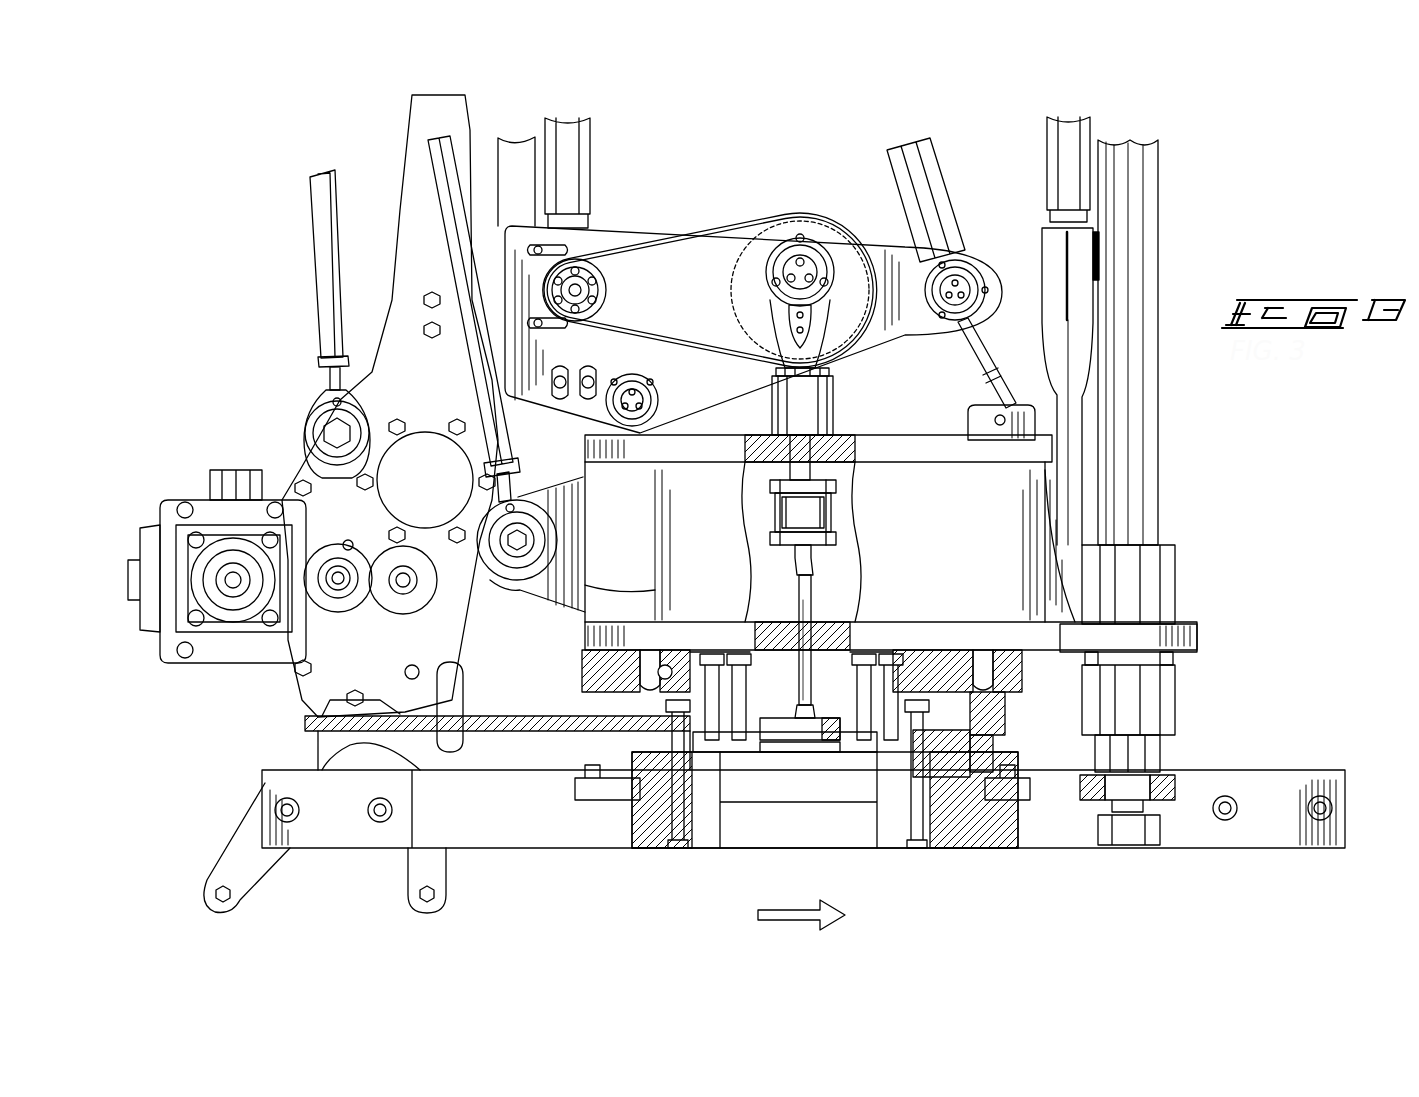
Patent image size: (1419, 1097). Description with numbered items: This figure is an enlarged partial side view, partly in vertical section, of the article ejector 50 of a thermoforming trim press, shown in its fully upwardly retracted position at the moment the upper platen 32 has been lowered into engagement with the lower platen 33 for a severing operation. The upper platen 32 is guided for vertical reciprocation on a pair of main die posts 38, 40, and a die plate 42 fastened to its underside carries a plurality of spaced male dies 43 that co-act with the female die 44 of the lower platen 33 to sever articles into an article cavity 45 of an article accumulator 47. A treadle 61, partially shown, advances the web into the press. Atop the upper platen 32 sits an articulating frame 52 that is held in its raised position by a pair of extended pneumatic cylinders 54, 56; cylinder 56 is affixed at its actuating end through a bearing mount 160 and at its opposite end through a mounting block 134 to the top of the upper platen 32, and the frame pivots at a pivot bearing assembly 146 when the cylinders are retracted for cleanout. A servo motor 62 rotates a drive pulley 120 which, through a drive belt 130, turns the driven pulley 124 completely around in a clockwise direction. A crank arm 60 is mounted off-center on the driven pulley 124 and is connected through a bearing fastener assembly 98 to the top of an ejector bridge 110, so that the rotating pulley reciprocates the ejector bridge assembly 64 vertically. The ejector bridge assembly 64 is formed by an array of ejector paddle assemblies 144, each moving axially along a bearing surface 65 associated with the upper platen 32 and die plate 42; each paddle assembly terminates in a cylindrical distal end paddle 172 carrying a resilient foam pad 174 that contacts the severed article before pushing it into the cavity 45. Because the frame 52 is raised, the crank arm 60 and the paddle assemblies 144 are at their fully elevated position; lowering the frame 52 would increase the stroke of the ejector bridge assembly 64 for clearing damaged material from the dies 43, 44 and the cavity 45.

The article ejector 50 is at (707, 128).
The treadle 61 is at (300, 346).
The servo motor 62 is at (600, 224).
The drive pulley 120 is at (605, 300).
The drive belt 130 is at (728, 232).
The crank arm 60 is at (762, 322).
The articulating frame 52 is at (893, 240).
The driven pulley 124 is at (835, 340).
The pivot bearing assembly 146 is at (632, 395).
The bearing fastener assembly 98 is at (850, 452).
The upper platen 32 is at (897, 444).
The ejector bridge 110 is at (838, 508).
The ejector bridge assembly 64 is at (815, 589).
The ejector paddle assembly 144 is at (792, 598).
The bearing surface 65 is at (815, 628).
The die plate 42 is at (1025, 668).
The female die 44 is at (665, 747).
The distal end paddle 172 is at (770, 718).
The male die 43 is at (745, 740).
The resilient foam pad 174 is at (810, 745).
The article cavity 45 is at (700, 850).
The article accumulator 47 is at (915, 858).
The lower platen 33 is at (566, 851).
The mounting block 134 is at (1010, 408).
The bearing mount 160 is at (975, 283).
The pneumatic cylinder 56 is at (993, 369).
The pneumatic cylinder 54 is at (942, 170).
The main die post 40 is at (1164, 492).
The main die post 38 is at (1162, 192).